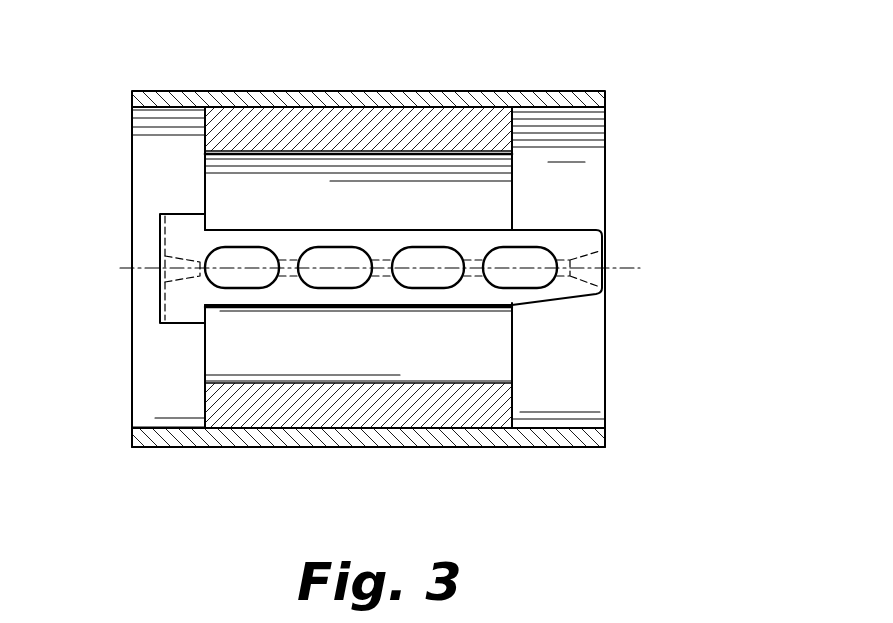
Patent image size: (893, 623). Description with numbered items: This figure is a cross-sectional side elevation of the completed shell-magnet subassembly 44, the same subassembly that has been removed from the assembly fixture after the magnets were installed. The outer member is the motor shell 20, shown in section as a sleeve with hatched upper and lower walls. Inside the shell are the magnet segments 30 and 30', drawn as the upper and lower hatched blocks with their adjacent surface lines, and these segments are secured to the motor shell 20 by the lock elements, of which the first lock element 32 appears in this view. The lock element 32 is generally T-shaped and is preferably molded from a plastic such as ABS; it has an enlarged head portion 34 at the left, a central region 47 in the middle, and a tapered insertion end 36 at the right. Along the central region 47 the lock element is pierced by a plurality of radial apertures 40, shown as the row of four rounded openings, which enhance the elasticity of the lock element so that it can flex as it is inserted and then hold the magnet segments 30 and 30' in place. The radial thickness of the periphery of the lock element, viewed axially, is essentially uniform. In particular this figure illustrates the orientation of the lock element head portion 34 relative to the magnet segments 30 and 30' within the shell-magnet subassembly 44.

The motor shell 20 is at (607, 122).
The magnet segment 30 is at (358, 123).
The magnet segment 30' is at (457, 365).
The first lock element 32 is at (175, 213).
The enlarged head portion 34 is at (185, 323).
The tapered insertion end 36 is at (565, 228).
The radial apertures 40 is at (318, 247).
The shell-magnet subassembly 44 is at (577, 462).
The central region 47 is at (403, 231).